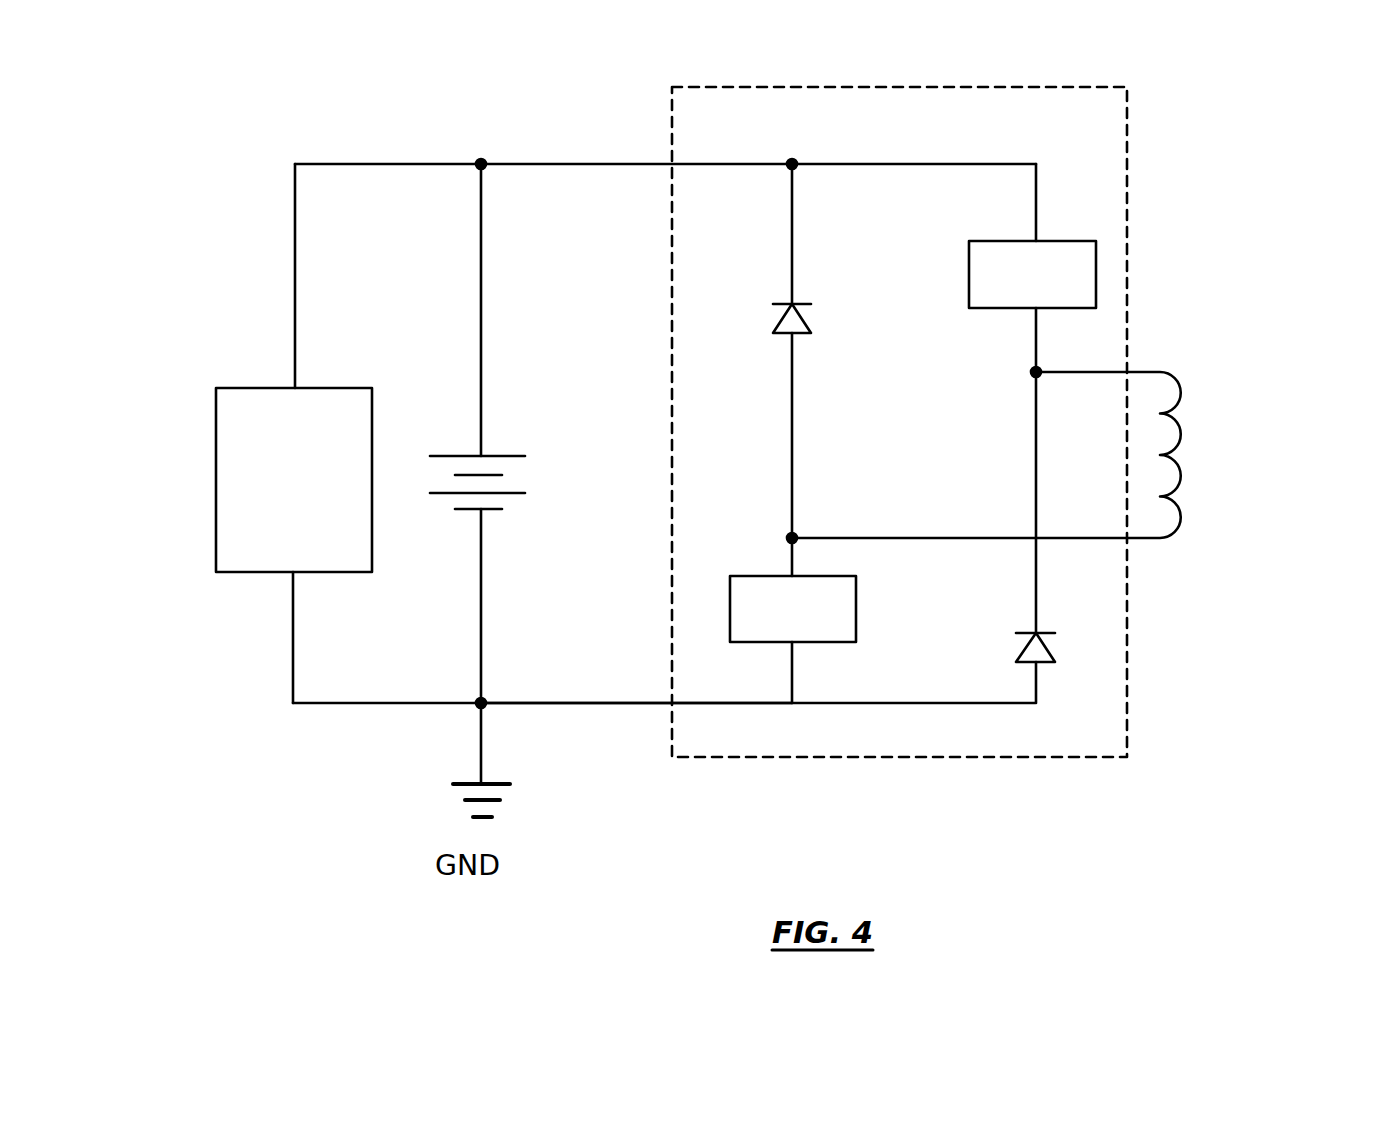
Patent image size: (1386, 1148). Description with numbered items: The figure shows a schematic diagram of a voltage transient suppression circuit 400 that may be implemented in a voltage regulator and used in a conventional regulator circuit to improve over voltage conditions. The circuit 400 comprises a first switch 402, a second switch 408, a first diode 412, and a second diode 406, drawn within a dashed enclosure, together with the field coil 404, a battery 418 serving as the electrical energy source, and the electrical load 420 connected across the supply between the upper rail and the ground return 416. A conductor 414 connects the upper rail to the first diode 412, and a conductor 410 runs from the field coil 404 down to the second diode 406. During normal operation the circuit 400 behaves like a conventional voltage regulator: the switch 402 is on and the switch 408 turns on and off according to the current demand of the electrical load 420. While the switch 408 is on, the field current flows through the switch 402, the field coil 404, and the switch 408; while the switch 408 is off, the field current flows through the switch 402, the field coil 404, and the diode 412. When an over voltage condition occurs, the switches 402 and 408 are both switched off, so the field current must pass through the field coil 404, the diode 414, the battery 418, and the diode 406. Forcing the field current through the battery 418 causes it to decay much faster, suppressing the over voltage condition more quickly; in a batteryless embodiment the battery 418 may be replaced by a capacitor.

The voltage transient suppression circuit 400 is at (1127, 193).
The first switch 402 is at (1096, 285).
The field coil 404 is at (1178, 388).
The second diode 406 is at (1055, 661).
The second switch 408 is at (858, 633).
The conductor to diode 410 is at (1035, 597).
The first diode 412 is at (810, 331).
The diode 414 is at (792, 265).
The ground conductor 416 is at (555, 703).
The battery 418 is at (502, 452).
The electrical load 420 is at (310, 385).